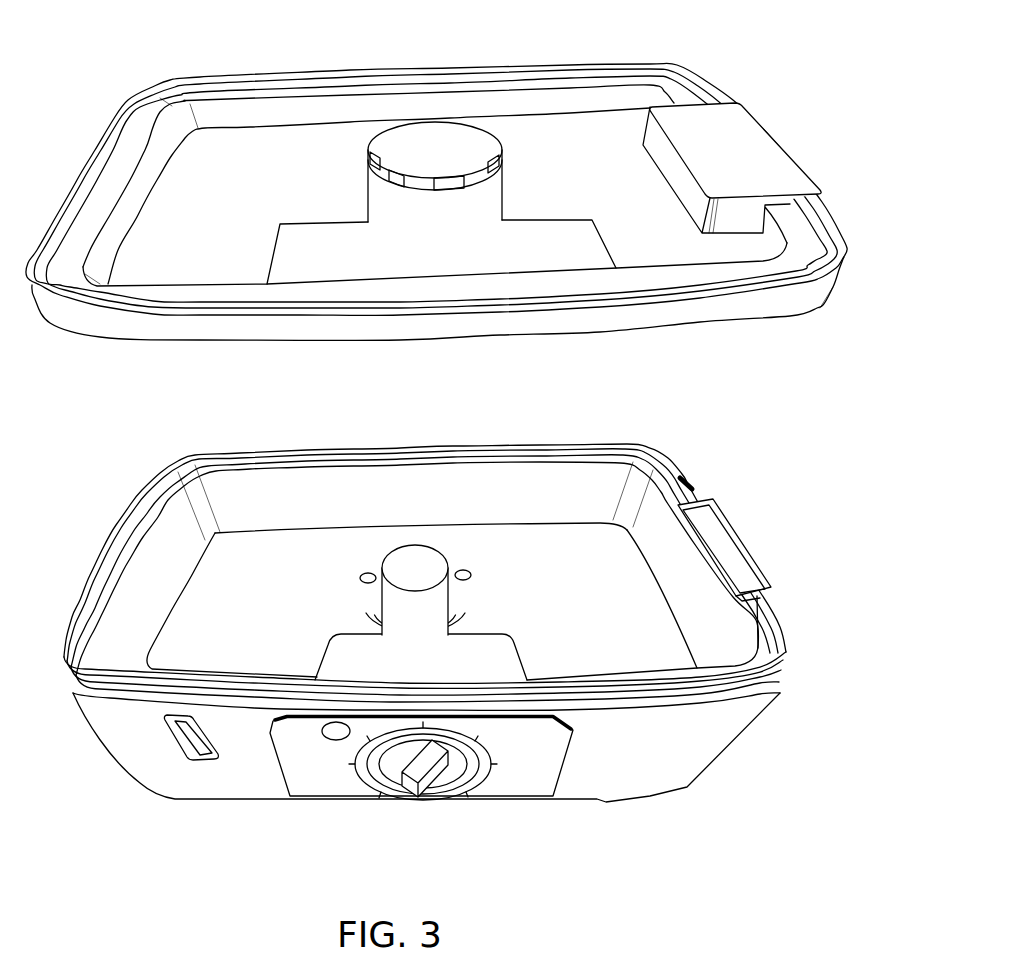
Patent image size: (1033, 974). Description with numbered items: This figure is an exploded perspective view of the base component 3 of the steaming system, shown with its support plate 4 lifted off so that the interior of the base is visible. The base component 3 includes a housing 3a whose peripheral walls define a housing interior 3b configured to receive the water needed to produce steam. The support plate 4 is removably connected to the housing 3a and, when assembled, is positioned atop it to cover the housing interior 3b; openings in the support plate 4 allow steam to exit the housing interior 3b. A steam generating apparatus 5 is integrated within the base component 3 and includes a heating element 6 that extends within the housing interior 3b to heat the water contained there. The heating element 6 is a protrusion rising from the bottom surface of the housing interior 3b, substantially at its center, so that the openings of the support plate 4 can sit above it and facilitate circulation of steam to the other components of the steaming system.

The base component 3 is at (425, 635).
The housing 3a is at (715, 628).
The housing interior 3b is at (628, 515).
The support plate 4 is at (738, 55).
The steam generating apparatus 5 is at (390, 514).
The heating element 6 is at (412, 560).